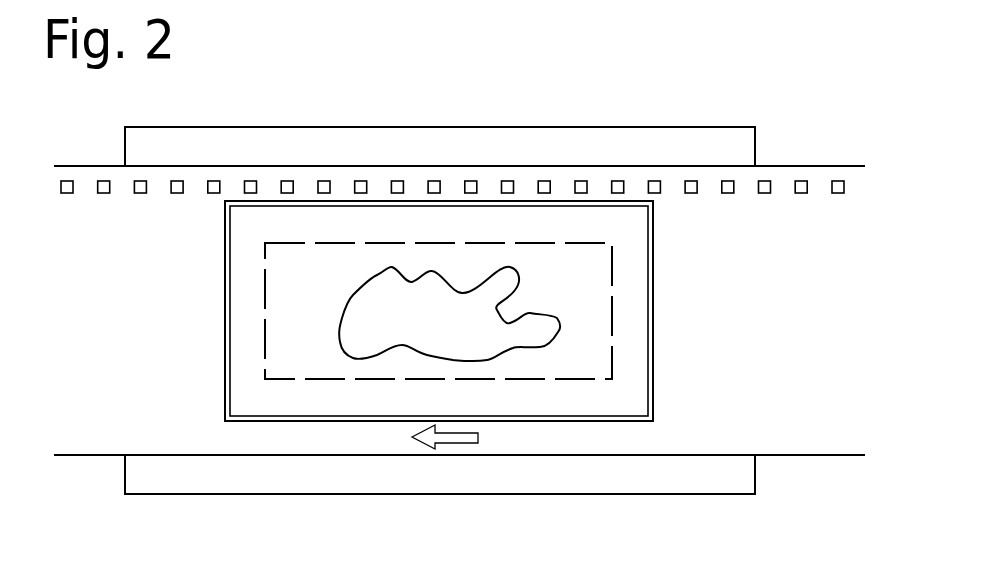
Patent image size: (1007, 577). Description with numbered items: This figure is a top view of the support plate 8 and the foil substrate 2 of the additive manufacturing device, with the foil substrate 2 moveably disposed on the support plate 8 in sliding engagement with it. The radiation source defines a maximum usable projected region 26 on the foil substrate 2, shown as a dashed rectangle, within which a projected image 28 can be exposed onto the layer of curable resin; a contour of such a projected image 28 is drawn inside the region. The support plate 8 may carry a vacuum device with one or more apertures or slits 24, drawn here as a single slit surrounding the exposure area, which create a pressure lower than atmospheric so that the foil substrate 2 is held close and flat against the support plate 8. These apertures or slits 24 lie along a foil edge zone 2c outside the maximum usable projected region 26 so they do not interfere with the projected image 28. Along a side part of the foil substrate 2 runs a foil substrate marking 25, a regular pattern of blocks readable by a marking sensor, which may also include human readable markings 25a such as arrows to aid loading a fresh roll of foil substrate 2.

The foil substrate 2 is at (757, 245).
The foil edge zone 2c is at (667, 395).
The support plate 8 is at (190, 470).
The apertures or slits 24 is at (653, 226).
The foil substrate marking 25 is at (507, 180).
The human readable markings 25a is at (453, 438).
The maximum usable projected region 26 is at (266, 261).
The projected image 28 is at (381, 268).